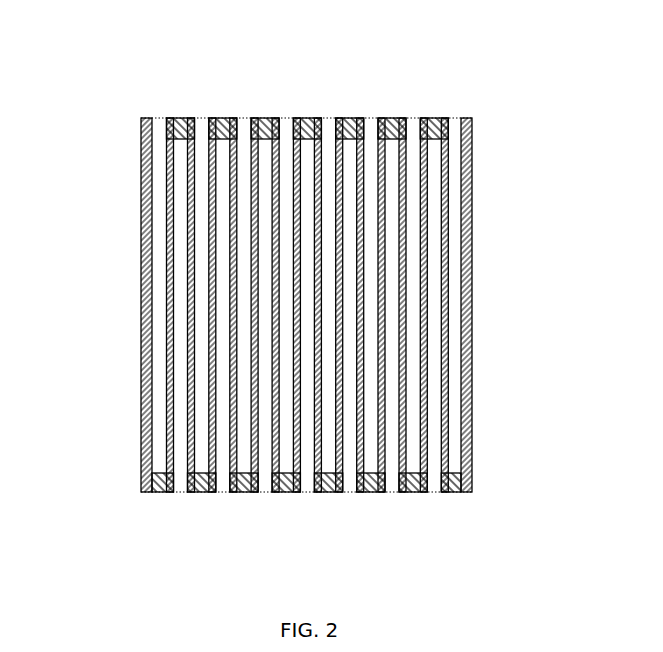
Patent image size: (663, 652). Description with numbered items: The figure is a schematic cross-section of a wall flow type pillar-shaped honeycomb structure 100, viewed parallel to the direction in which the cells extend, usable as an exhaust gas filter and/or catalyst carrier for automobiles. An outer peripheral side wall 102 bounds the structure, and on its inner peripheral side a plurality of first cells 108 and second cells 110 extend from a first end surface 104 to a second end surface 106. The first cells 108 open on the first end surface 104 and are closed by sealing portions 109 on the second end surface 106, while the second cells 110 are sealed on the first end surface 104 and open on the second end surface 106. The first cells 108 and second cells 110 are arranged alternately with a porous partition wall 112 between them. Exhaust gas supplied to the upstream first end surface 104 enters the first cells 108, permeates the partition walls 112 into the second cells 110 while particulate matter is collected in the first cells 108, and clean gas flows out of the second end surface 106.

The pillar-shaped honeycomb structure 100 is at (293, 88).
The outer peripheral side wall 102 is at (141, 158).
The first end surface 104 is at (142, 492).
The second end surface 106 is at (147, 118).
The first cells 108 is at (180, 492).
The sealing portions 109 is at (433, 118).
The second cells 110 is at (203, 118).
The partition wall 112 is at (167, 257).